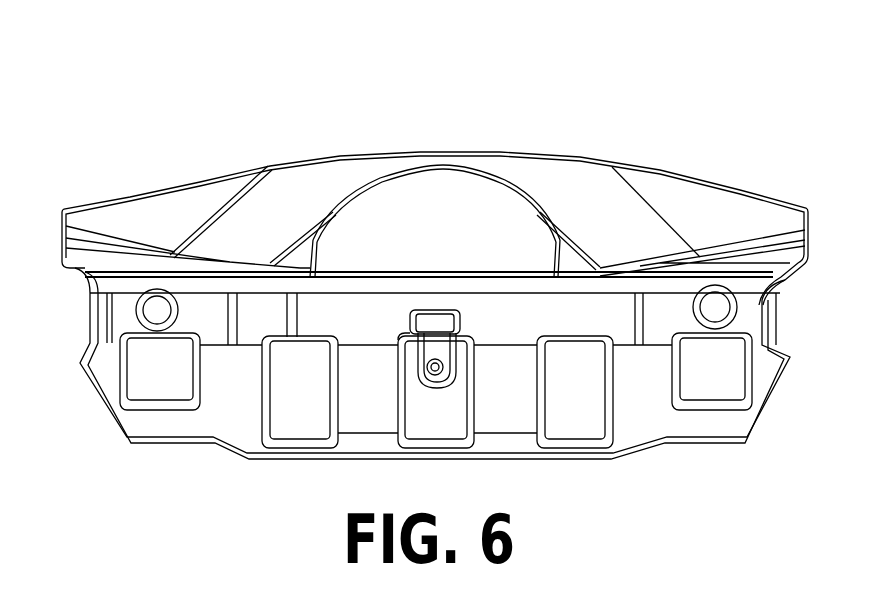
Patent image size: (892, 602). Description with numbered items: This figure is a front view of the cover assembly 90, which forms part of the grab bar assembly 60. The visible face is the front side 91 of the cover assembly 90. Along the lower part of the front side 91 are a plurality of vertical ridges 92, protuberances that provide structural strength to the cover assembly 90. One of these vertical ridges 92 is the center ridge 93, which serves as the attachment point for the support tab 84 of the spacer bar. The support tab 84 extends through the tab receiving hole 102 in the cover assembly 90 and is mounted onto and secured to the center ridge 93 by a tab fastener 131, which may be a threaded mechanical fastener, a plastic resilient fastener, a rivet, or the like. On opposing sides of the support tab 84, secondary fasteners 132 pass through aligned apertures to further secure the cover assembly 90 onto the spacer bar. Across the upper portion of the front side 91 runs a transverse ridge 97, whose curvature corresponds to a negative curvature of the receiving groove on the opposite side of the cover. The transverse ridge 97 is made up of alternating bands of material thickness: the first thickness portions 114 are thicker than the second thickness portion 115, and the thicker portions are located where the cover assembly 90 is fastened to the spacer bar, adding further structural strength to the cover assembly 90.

The grab bar assembly 60 is at (108, 37).
The cover assembly 90 is at (107, 172).
The front side 91 is at (678, 188).
The vertical ridges 92 is at (155, 392).
The center ridge 93 is at (447, 427).
The transverse ridge 97 is at (528, 300).
The support tab 84 is at (428, 340).
The tab receiving hole 102 is at (418, 317).
The tab fastener 131 is at (442, 357).
The secondary fastener 132 is at (153, 312).
The first thickness portions 114 is at (205, 303).
The second thickness portion 115 is at (257, 303).